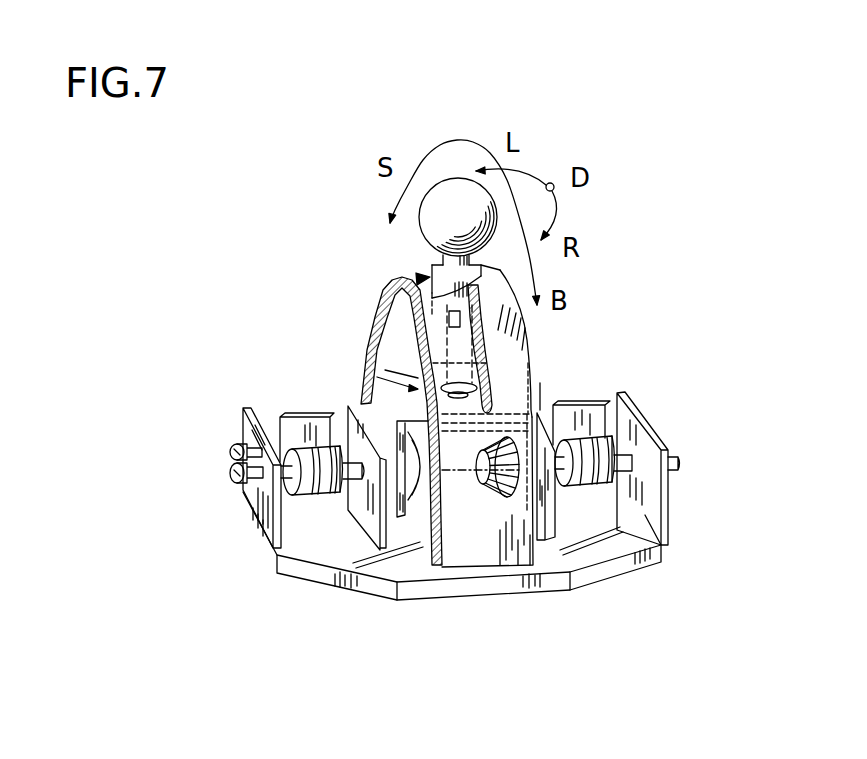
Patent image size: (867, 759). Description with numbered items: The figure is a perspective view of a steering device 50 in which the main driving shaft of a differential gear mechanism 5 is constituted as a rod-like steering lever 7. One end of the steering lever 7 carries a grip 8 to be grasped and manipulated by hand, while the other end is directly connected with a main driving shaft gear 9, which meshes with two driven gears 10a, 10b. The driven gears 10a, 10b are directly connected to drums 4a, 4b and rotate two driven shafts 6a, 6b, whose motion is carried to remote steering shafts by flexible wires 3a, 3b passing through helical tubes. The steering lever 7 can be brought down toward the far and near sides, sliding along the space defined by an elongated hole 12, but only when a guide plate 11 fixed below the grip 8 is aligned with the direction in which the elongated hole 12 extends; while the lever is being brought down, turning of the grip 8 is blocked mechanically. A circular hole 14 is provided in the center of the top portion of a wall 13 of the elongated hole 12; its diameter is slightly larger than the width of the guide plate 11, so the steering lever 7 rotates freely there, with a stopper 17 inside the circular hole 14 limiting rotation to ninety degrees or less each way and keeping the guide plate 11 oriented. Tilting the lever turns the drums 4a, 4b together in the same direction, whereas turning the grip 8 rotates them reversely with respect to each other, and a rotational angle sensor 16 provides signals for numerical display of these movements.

The steering device 50 is at (623, 202).
The grip 8 is at (431, 213).
The guide plate 11 is at (440, 276).
The stopper 17 is at (417, 278).
The steering lever 7 is at (455, 353).
The differential gear mechanism 5 is at (367, 366).
The circular hole 14 is at (484, 273).
The wall 13 is at (526, 335).
The elongated hole 12 is at (541, 383).
The flexible wire 3a is at (307, 398).
The flexible wire 3b is at (545, 400).
The rotational angle sensor 16 is at (230, 449).
The drum 4a is at (320, 505).
The drum 4b is at (634, 492).
The driven shaft 6a is at (357, 492).
The driven shaft 6b is at (568, 490).
The main driving shaft gear 9 is at (452, 443).
The driven gear 10a is at (424, 541).
The driven gear 10b is at (505, 500).